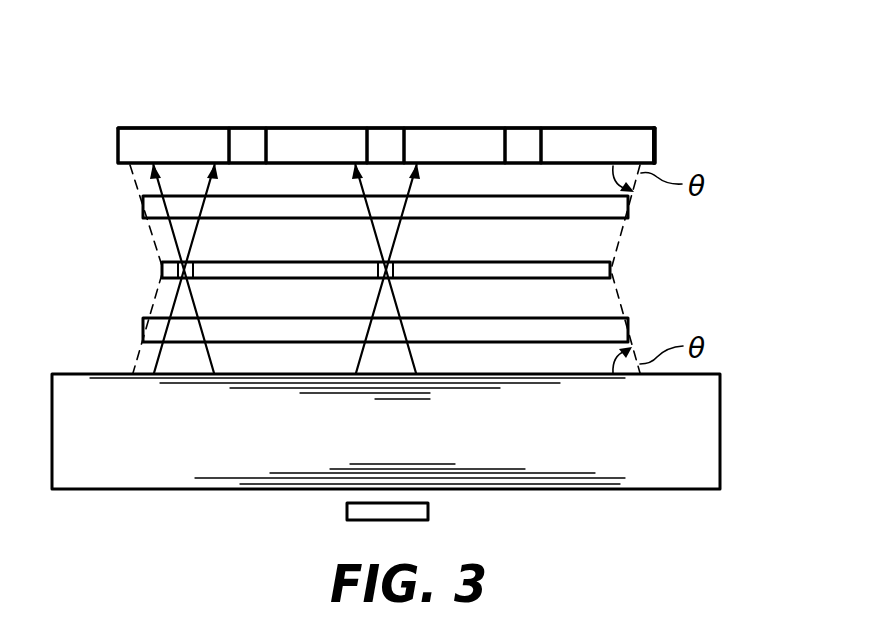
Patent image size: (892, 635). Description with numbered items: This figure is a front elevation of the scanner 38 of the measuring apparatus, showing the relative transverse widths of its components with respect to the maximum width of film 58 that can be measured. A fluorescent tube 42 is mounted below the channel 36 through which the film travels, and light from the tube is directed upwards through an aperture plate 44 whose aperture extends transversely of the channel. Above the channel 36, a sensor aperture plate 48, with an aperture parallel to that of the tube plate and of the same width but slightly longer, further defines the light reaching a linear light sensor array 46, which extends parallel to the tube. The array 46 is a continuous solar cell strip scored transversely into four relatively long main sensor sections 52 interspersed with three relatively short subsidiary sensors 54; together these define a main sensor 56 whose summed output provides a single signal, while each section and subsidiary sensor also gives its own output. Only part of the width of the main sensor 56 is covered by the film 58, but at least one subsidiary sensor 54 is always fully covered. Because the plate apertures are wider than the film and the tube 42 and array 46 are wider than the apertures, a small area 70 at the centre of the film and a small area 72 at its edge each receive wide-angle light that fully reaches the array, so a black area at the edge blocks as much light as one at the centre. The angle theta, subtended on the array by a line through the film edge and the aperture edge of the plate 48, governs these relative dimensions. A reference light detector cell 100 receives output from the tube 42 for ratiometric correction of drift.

The scanner 38 is at (701, 62).
The linear light sensor array 46 is at (110, 140).
The main sensor 56 is at (123, 110).
The main sensor sections 52 is at (180, 87).
The subsidiary sensors 54 is at (256, 87).
The sensor aperture plate 48 is at (347, 220).
The film 58 is at (553, 262).
The small area at the edge of the film 72 is at (195, 262).
The small area in the centre of the film 70 is at (398, 262).
The aperture plate 44 is at (290, 318).
The channel 36 is at (528, 313).
The fluorescent tube 42 is at (722, 417).
The reference light detector cell 100 is at (430, 511).